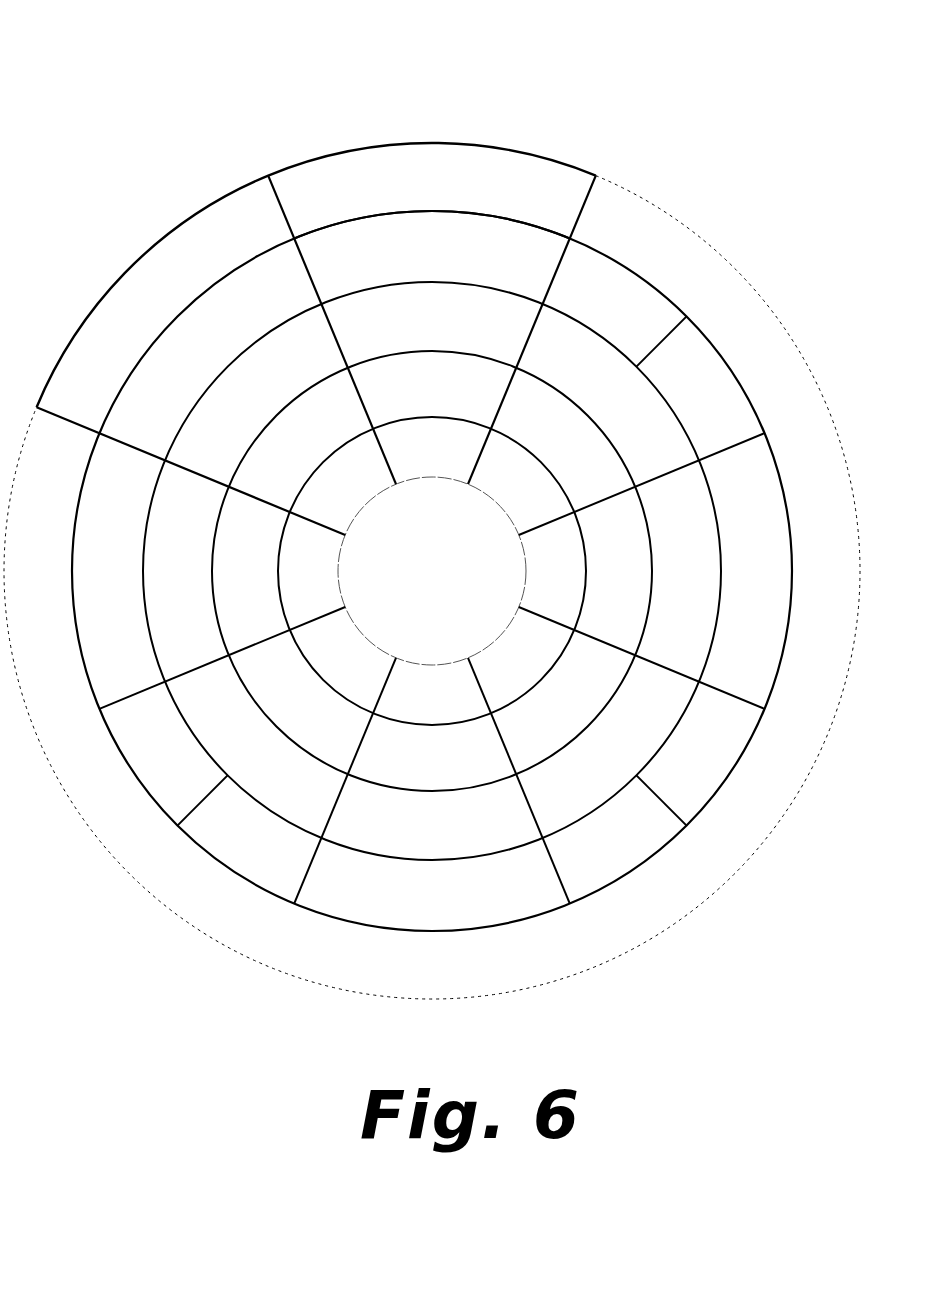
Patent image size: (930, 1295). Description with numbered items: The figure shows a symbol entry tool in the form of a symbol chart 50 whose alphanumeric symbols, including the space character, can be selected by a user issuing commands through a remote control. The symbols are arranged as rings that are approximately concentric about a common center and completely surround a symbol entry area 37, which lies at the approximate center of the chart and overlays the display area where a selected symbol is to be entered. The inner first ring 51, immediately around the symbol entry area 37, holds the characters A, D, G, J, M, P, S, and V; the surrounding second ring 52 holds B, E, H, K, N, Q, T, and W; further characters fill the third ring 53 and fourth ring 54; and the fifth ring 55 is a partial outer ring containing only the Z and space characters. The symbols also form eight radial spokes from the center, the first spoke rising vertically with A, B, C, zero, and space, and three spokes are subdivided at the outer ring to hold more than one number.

The symbol entry area 37 is at (432, 571).
The symbol chart 50 is at (347, 76).
The first ring 51 is at (369, 666).
The second ring 52 is at (282, 670).
The third ring 53 is at (394, 312).
The fourth ring 54 is at (594, 280).
The fifth ring 55 is at (535, 186).